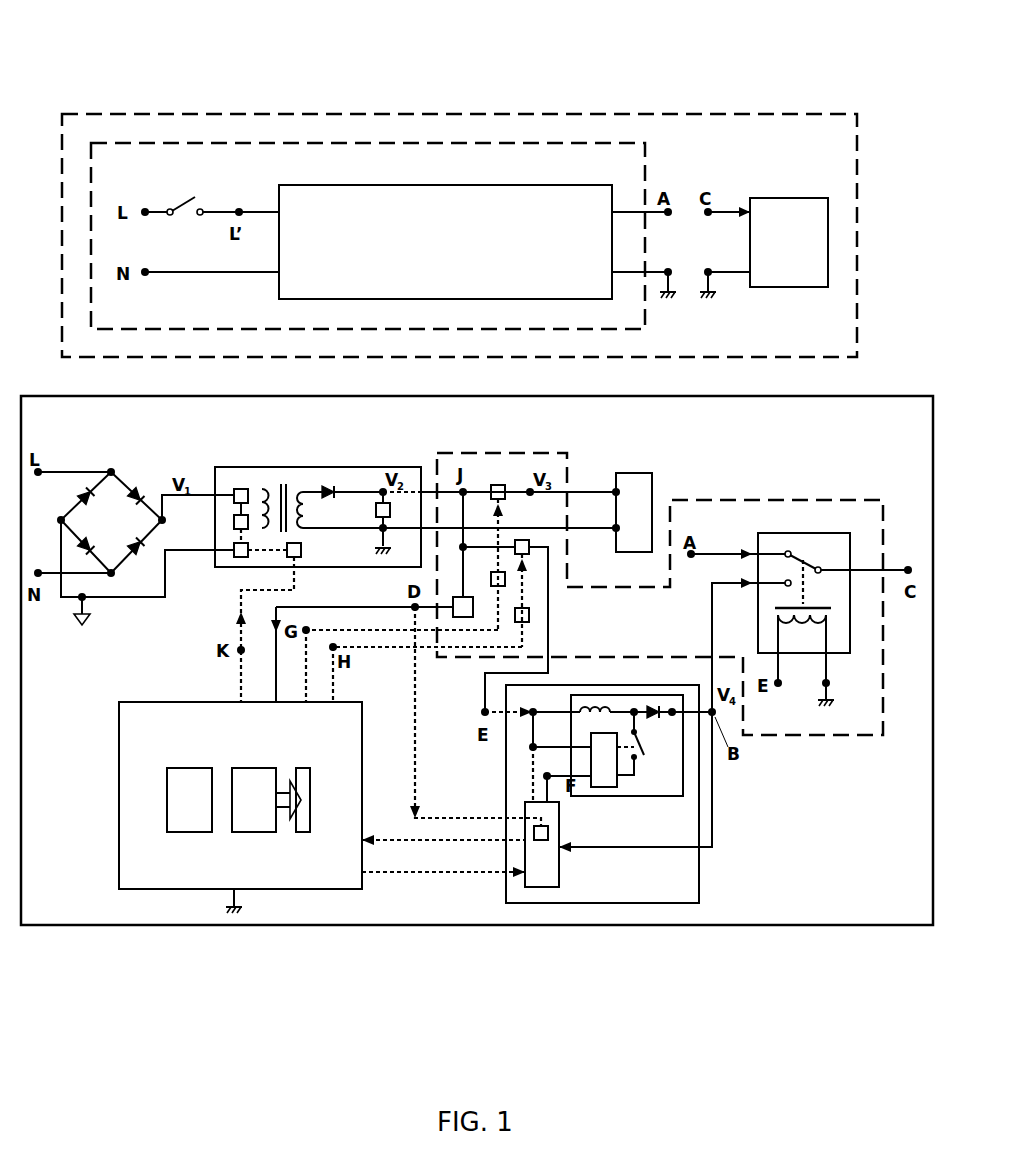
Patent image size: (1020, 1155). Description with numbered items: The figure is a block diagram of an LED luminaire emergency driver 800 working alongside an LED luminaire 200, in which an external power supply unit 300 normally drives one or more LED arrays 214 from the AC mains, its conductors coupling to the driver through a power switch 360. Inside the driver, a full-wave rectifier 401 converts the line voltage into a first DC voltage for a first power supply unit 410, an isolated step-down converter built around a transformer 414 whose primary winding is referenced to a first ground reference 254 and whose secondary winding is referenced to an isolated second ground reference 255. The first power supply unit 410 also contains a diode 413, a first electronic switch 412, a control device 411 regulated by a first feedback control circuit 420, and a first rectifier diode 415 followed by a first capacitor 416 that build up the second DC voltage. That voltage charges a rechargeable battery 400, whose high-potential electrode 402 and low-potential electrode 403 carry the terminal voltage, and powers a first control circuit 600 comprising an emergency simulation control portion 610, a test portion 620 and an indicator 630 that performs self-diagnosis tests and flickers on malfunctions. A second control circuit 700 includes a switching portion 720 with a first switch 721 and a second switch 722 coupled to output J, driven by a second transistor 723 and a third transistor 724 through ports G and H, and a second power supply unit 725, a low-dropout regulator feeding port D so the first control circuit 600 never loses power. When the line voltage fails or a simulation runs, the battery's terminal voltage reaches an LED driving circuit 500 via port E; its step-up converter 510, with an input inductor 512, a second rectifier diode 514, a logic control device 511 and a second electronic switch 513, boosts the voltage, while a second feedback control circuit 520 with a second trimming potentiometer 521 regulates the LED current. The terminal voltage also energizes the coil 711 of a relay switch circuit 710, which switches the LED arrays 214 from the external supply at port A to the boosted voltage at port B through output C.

The LED luminaire 200 is at (613, 110).
The external power supply unit 300 is at (453, 138).
The power switch 360 is at (178, 203).
The LED arrays 214 is at (782, 197).
The second ground reference 255 is at (713, 299).
The LED luminaire emergency driver 800 is at (774, 935).
The full-wave rectifier 401 is at (98, 462).
The first ground reference 254 is at (78, 628).
The first power supply unit 410 is at (294, 461).
The diode 413 is at (241, 488).
The first electronic switch 412 is at (237, 531).
The control device 411 is at (239, 558).
The first feedback control circuit 420 is at (301, 558).
The transformer 414 is at (285, 490).
The first rectifier diode 415 is at (333, 487).
The first capacitor 416 is at (378, 516).
The first switch 721 is at (496, 484).
The high-potential electrode 402 is at (613, 488).
The low-potential electrode 403 is at (613, 533).
The rechargeable battery 400 is at (654, 489).
The second switch 722 is at (530, 553).
The second transistor 723 is at (494, 588).
The third transistor 724 is at (530, 617).
The second power supply unit 725 is at (427, 633).
The switching unit 720 is at (660, 594).
The second control circuit 700 is at (888, 745).
The first control circuit 600 is at (280, 898).
The emergency simulation control portion 610 is at (167, 771).
The test portion 620 is at (257, 770).
The indicator 630 is at (300, 770).
The LED driving circuit 500 is at (608, 914).
The step-up converter 510 is at (656, 806).
The input inductor 512 is at (600, 705).
The second rectifier diode 514 is at (657, 704).
The logic control device 511 is at (603, 790).
The second electronic switch 513 is at (648, 752).
The second feedback control circuit 520 is at (546, 898).
The second trimming potentiometer 521 is at (549, 841).
The relay switch circuit 710 is at (859, 648).
The coil 711 is at (803, 622).